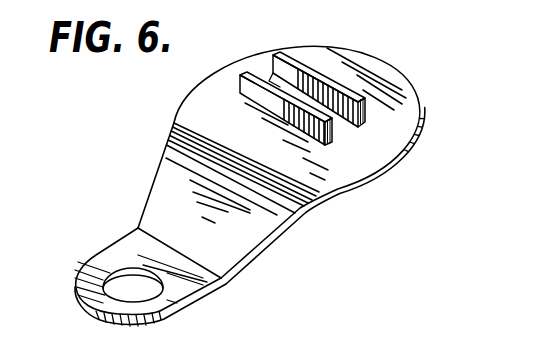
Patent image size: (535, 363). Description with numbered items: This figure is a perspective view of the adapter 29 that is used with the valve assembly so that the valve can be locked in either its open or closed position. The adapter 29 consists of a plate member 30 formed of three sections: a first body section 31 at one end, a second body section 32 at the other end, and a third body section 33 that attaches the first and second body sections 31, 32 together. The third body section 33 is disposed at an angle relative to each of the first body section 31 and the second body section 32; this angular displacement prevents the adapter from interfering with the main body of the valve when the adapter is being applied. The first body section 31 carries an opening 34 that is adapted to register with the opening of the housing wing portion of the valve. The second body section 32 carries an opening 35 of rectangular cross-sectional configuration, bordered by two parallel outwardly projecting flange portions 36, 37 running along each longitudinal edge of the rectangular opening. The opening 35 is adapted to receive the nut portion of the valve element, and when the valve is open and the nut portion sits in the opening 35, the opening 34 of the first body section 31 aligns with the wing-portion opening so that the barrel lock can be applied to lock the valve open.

The adapter 29 is at (280, 234).
The plate member 30 is at (350, 185).
The first body section 31 is at (168, 302).
The second body section 32 is at (402, 88).
The third body section 33 is at (155, 172).
The opening 34 is at (128, 268).
The opening 35 is at (345, 128).
The flange portion 36 is at (320, 76).
The flange portion 37 is at (255, 75).